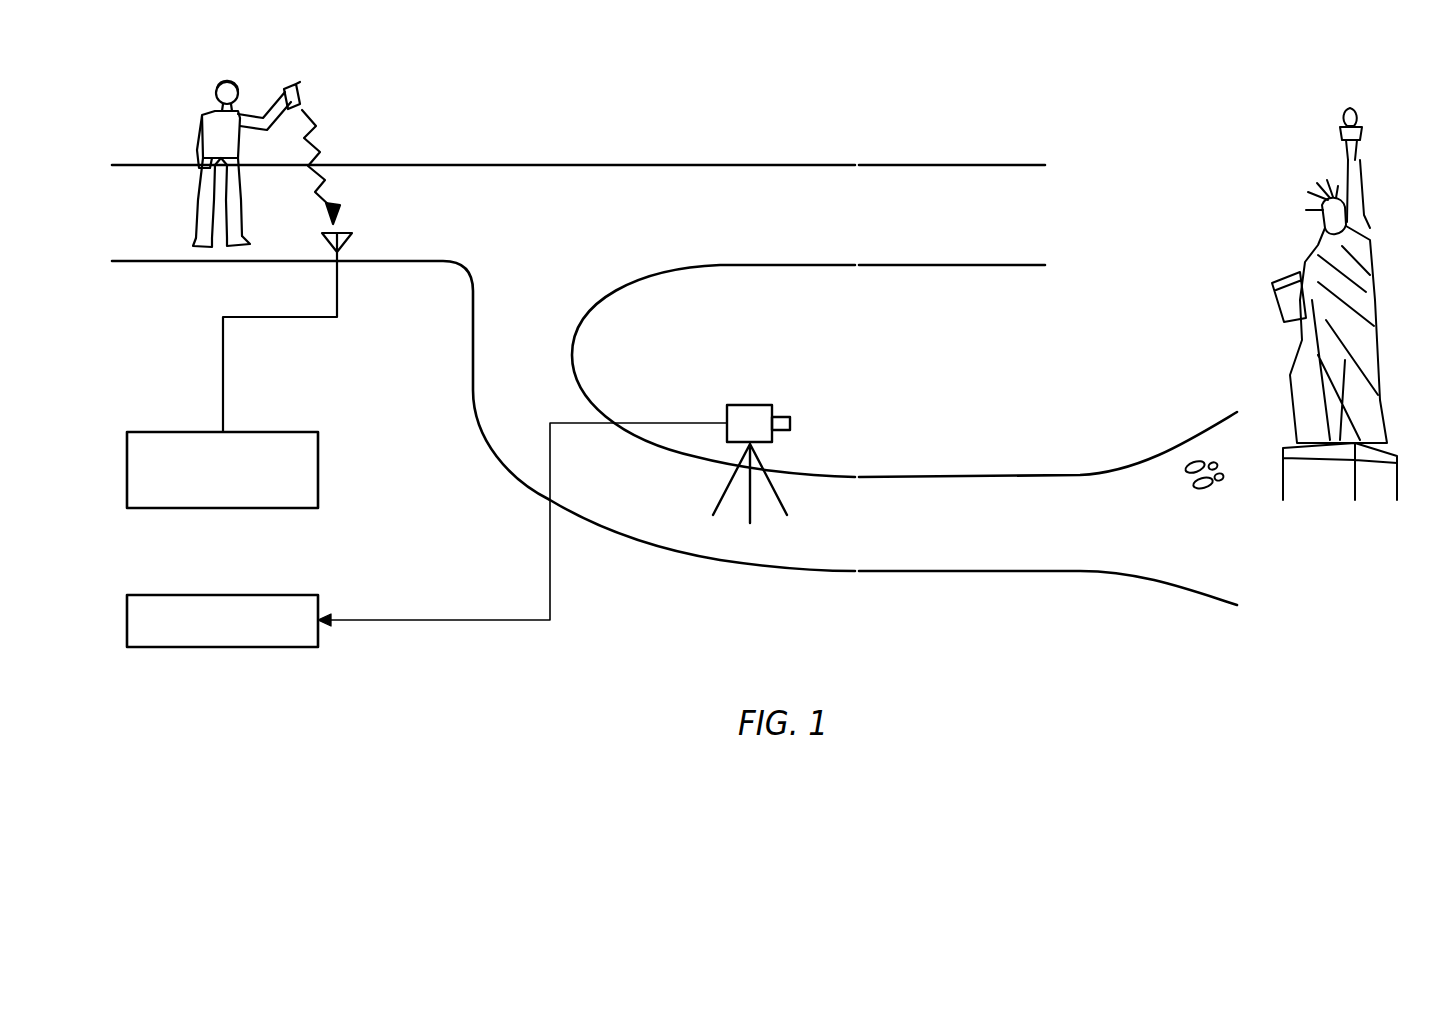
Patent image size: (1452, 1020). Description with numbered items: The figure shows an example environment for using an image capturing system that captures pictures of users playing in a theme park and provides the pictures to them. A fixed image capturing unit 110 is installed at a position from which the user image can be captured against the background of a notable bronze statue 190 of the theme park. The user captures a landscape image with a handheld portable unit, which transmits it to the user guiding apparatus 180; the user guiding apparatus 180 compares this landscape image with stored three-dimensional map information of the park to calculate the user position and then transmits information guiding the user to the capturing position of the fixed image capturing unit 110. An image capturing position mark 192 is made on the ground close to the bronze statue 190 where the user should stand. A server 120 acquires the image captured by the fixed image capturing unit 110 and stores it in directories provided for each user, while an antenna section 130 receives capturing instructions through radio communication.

The fixed image capturing unit 110 is at (752, 405).
The server 120 is at (223, 647).
The antenna section 130 is at (337, 292).
The user guiding apparatus 180 is at (223, 508).
The bronze statue 190 is at (1372, 272).
The image capturing position mark 192 is at (1194, 460).